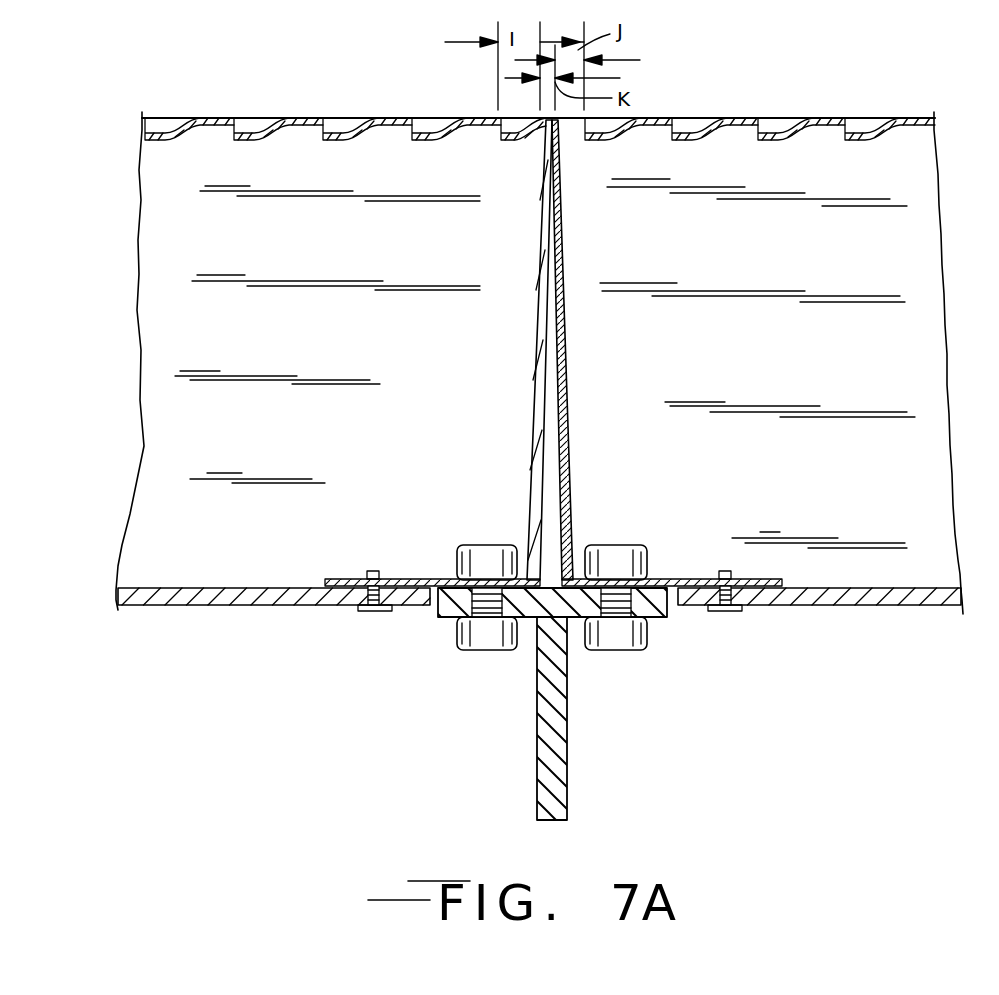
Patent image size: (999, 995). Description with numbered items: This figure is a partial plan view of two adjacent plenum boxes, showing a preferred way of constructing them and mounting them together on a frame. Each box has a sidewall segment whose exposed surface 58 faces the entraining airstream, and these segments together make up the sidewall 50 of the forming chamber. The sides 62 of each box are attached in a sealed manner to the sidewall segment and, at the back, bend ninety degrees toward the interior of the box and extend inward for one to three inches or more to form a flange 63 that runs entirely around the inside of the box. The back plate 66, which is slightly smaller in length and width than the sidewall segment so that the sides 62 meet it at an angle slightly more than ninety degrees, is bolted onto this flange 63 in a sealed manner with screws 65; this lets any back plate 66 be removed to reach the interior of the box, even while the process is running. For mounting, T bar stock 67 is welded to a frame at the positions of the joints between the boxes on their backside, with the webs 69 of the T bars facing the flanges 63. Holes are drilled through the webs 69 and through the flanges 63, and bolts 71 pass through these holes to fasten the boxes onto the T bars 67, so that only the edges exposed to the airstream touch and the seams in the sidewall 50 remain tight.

The sidewall 50 is at (210, 105).
The exposed surface 58 is at (303, 118).
The sides 62 is at (535, 393).
The flange 63 is at (417, 580).
The screws 65 is at (370, 612).
The back plate 66 is at (228, 605).
The T bar stock 67 is at (556, 747).
The webs 69 is at (443, 618).
The bolts 71 is at (488, 648).